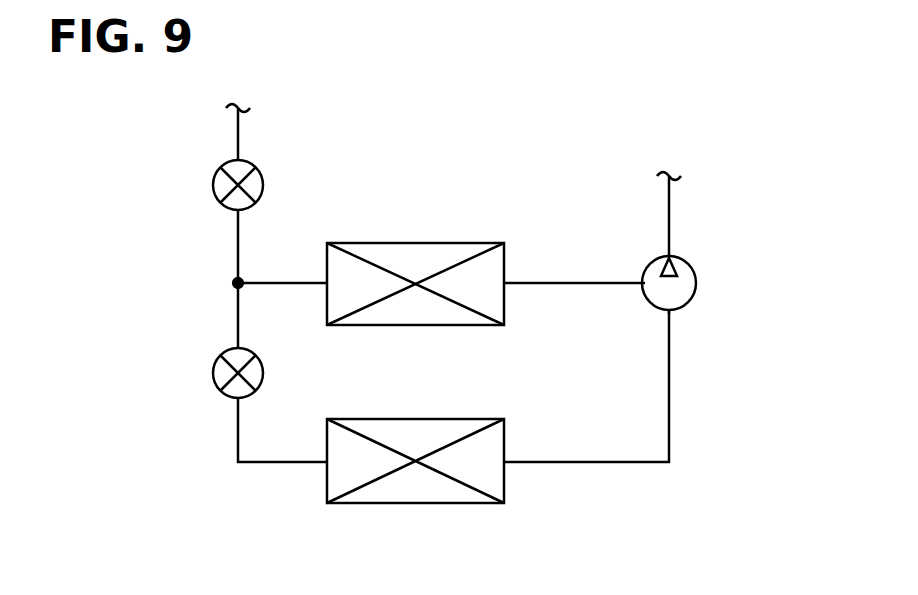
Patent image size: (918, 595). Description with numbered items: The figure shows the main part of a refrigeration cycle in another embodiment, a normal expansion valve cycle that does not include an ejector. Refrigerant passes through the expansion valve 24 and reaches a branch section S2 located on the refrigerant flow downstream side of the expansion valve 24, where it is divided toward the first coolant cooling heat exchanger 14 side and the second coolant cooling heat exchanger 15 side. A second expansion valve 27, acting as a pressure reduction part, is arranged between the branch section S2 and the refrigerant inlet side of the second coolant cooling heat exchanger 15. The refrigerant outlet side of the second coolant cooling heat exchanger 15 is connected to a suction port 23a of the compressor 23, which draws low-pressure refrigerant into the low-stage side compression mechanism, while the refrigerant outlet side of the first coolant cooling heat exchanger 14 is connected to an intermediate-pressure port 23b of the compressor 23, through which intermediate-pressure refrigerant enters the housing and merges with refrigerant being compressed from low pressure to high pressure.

The first coolant cooling heat exchanger 14 is at (380, 243).
The second coolant cooling heat exchanger 15 is at (320, 483).
The compressor 23 is at (697, 280).
The suction port 23a is at (672, 314).
The intermediate-pressure port 23b is at (642, 274).
The expansion valve 24 is at (212, 188).
The second expansion valve 27 is at (212, 375).
The branch section S2 is at (231, 283).